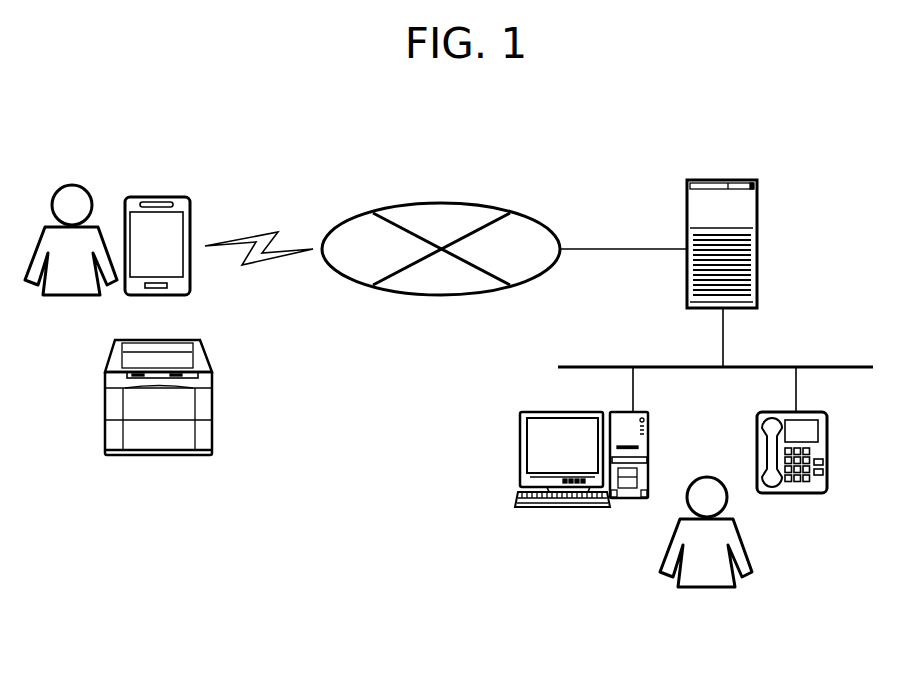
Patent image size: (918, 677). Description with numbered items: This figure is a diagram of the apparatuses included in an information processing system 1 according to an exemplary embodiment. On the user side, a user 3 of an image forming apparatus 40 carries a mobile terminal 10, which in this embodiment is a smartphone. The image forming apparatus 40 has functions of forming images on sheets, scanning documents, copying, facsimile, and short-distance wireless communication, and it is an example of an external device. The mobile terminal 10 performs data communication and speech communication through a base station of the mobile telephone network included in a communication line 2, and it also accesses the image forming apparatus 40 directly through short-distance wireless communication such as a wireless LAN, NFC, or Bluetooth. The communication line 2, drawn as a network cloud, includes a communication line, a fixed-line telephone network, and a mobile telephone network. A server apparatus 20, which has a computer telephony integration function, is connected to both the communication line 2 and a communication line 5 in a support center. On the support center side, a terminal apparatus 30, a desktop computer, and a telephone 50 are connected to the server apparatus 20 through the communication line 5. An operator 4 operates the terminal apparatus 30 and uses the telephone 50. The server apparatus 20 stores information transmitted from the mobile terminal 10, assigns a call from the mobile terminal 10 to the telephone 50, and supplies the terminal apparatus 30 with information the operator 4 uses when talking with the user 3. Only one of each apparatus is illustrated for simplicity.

The information processing system 1 is at (332, 447).
The communication line 2 is at (367, 213).
The user 3 is at (90, 187).
The operator 4 is at (700, 475).
The communication line 5 is at (762, 365).
The mobile terminal 10 is at (183, 195).
The server apparatus 20 is at (687, 193).
The terminal apparatus 30 is at (525, 410).
The image forming apparatus 40 is at (212, 360).
The telephone 50 is at (827, 415).